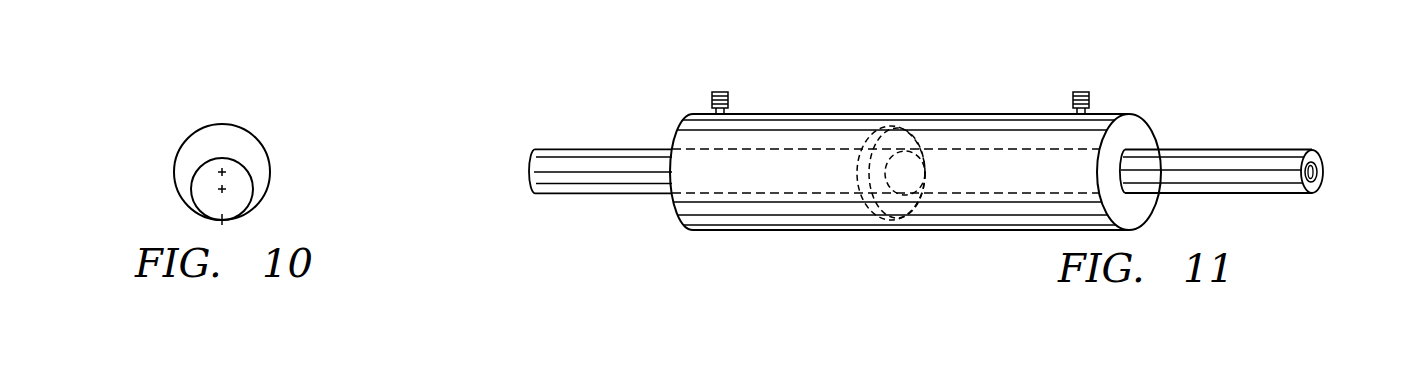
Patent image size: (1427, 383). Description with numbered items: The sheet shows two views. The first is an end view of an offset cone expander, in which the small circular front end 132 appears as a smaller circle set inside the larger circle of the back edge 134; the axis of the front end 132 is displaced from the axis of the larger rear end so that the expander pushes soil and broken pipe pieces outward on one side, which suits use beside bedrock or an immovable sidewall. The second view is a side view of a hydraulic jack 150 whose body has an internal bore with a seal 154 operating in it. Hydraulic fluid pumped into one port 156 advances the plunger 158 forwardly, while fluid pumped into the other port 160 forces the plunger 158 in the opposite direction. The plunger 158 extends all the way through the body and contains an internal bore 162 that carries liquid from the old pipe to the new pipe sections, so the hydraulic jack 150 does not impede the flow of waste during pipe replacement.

In FIG. 10, the circular front end 132 is at (253, 188).
In FIG. 10, the back edge 134 is at (173, 173).
In FIG. 11, the hydraulic jack 150 is at (1160, 112).
In FIG. 11, the seal 154 is at (912, 137).
In FIG. 11, the port 156 is at (720, 92).
In FIG. 11, the plunger 158 is at (1238, 147).
In FIG. 11, the port 160 is at (1082, 92).
In FIG. 11, the internal bore 162 is at (1323, 178).